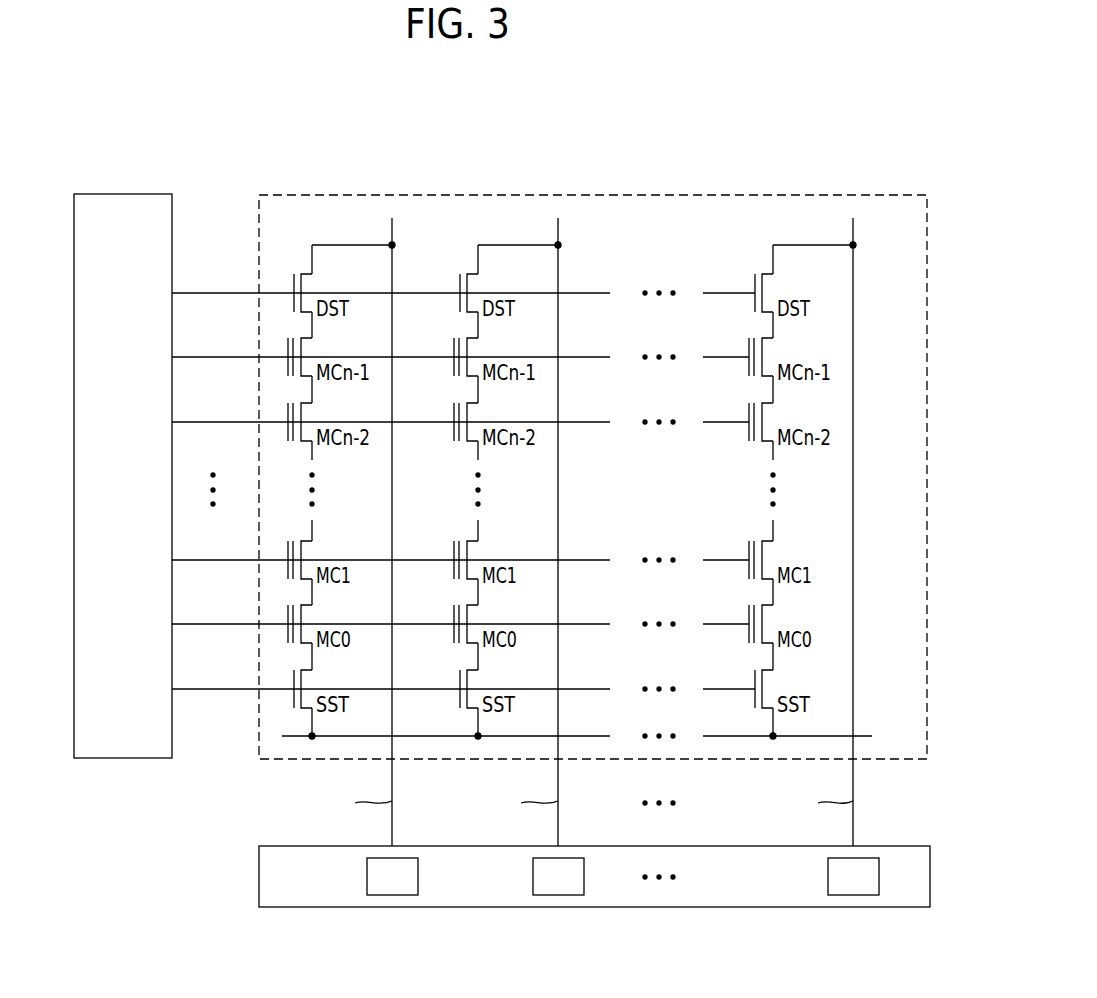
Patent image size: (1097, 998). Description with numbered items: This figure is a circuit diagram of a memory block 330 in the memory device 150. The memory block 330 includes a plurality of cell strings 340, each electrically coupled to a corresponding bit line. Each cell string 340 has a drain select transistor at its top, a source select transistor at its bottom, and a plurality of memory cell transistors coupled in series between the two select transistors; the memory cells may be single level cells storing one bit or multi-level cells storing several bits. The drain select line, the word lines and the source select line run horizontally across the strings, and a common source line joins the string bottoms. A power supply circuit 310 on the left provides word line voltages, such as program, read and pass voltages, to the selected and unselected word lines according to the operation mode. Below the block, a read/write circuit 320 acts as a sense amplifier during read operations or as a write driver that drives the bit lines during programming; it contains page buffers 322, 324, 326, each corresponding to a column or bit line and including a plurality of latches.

The memory device 150 is at (902, 98).
The power supply circuit 310 is at (122, 194).
The read/write circuit 320 is at (259, 882).
The page buffer 322 is at (367, 882).
The page buffer 324 is at (533, 882).
The page buffer 326 is at (828, 882).
The memory block 330 is at (815, 194).
The cell string 340 is at (301, 243).